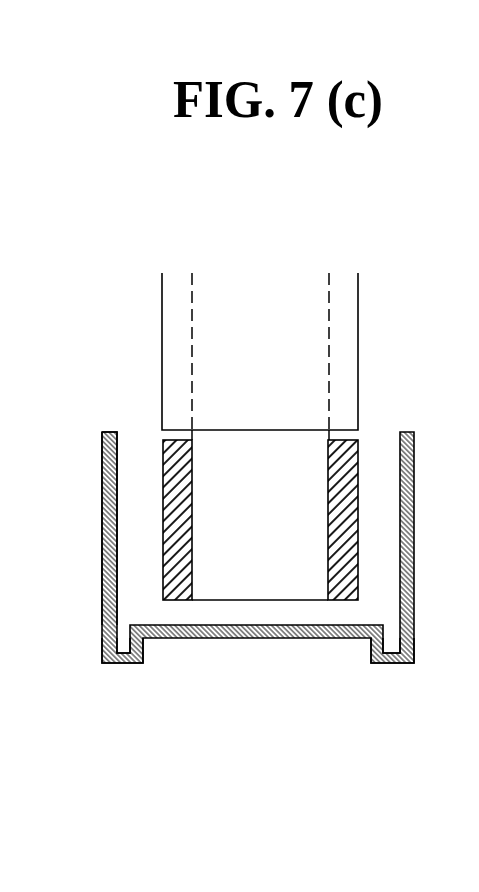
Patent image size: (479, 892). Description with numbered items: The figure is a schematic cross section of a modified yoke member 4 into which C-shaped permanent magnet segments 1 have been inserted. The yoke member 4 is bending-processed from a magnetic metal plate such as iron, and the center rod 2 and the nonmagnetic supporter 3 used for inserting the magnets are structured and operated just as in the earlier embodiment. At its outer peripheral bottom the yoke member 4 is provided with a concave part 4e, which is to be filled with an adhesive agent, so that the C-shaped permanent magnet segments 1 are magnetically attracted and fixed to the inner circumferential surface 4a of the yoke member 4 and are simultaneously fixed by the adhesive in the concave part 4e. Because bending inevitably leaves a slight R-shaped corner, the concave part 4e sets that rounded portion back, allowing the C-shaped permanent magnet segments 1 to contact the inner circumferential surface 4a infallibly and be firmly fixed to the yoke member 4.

The C-shaped permanent magnet segment 1 is at (177, 593).
The center rod 2 is at (312, 528).
The nonmagnetic supporter 3 is at (358, 325).
The yoke member 4 is at (102, 537).
The inner circumferential surface 4a is at (117, 475).
The concave part 4e is at (122, 664).